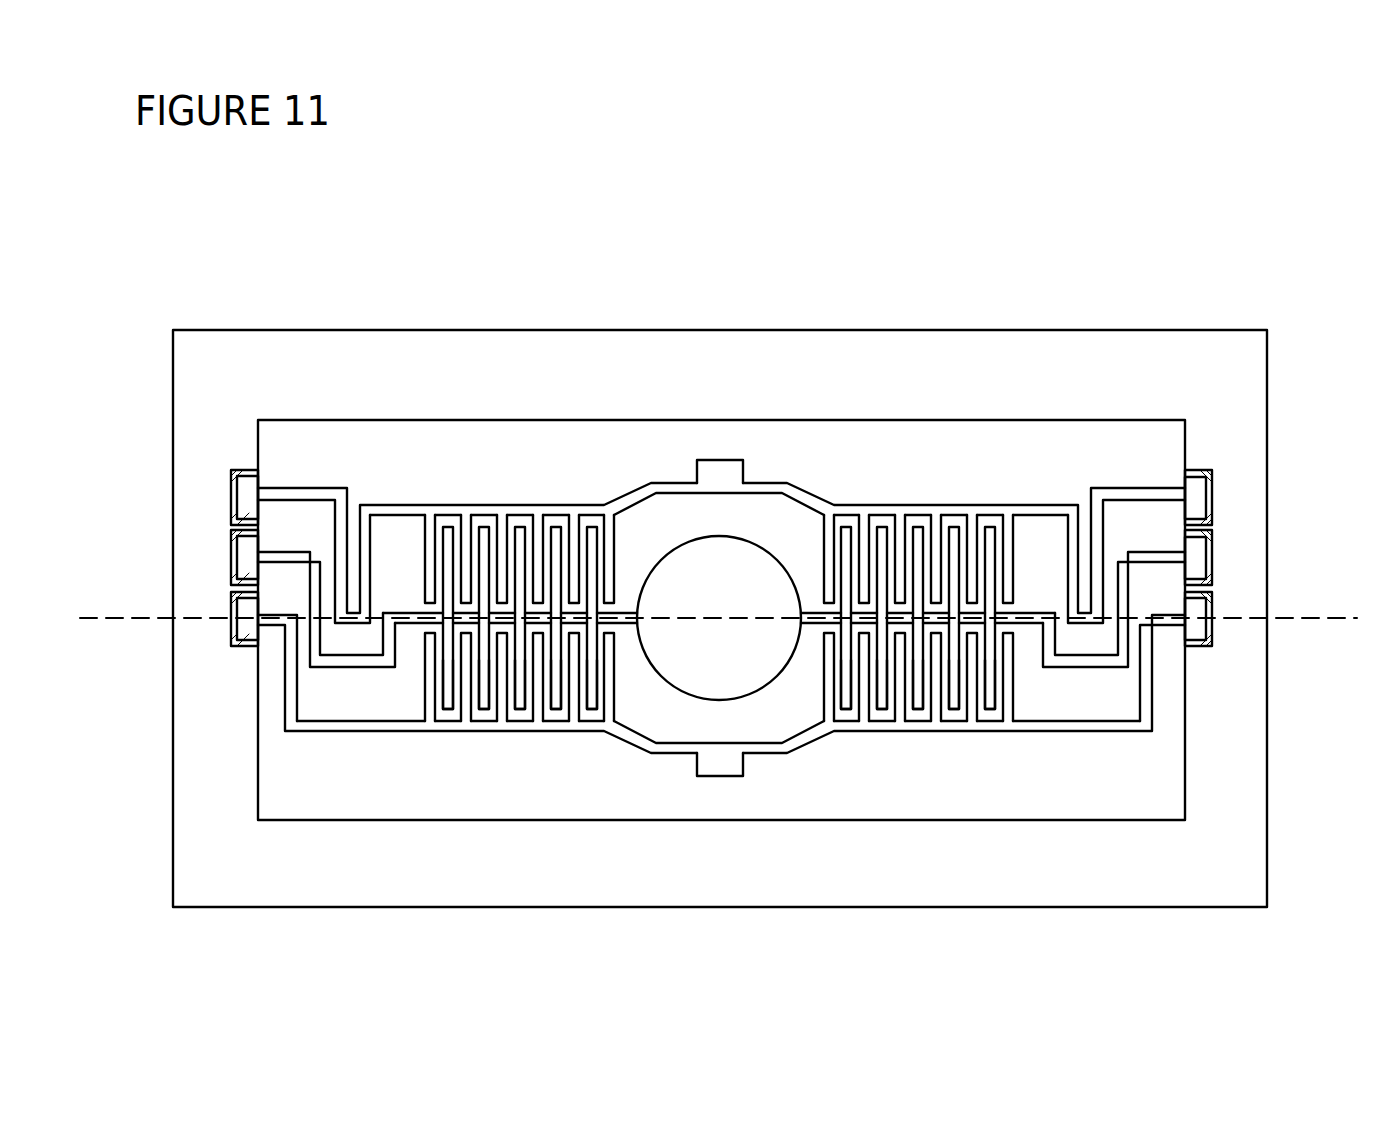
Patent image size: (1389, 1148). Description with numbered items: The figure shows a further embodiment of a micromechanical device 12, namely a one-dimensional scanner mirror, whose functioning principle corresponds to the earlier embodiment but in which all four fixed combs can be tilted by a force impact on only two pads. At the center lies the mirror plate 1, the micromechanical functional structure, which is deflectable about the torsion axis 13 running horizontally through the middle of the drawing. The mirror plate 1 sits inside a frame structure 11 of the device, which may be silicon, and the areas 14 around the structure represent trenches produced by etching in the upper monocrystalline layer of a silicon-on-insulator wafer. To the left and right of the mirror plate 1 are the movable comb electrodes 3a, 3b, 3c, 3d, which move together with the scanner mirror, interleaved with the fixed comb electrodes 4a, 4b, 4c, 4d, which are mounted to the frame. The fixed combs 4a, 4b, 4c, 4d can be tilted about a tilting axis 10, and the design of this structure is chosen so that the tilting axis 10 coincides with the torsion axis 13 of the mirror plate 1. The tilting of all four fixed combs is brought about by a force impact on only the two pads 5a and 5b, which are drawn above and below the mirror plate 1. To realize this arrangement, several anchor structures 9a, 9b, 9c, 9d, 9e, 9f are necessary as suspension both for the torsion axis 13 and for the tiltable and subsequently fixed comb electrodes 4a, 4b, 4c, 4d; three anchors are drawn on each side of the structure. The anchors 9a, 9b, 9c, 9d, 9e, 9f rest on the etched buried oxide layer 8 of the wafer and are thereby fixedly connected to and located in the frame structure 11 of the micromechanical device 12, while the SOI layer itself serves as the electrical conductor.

The mirror plate 1 is at (753, 572).
The movable comb electrode 3a is at (447, 532).
The movable comb electrode 3b is at (887, 535).
The movable comb electrode 3c is at (447, 700).
The movable comb electrode 3d is at (842, 703).
The fixed comb electrode 4a is at (537, 533).
The fixed comb electrode 4b is at (939, 528).
The fixed comb electrode 4c is at (465, 700).
The fixed comb electrode 4d is at (975, 703).
The pad 5a is at (720, 473).
The pad 5b is at (716, 777).
The buried oxide layer 8 is at (1198, 467).
The anchor 9a is at (246, 492).
The anchor 9b is at (246, 552).
The anchor 9c is at (246, 630).
The anchor 9d is at (1197, 492).
The anchor 9e is at (1197, 553).
The anchor 9f is at (1197, 630).
The tilting axis 10 is at (1277, 617).
The frame structure 11 is at (1078, 360).
The micromechanical device 12 is at (993, 245).
The torsion axis 13 is at (734, 585).
The trenches 14 is at (1005, 478).